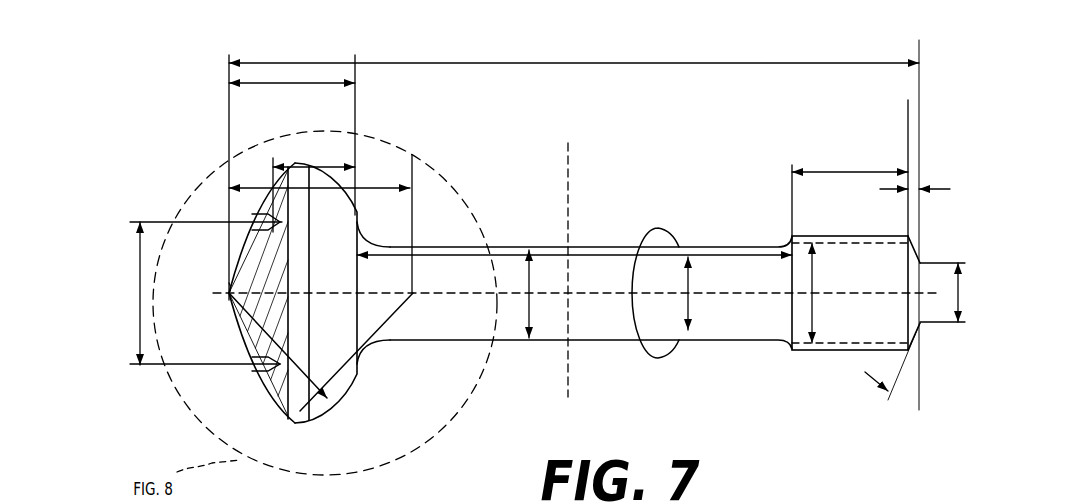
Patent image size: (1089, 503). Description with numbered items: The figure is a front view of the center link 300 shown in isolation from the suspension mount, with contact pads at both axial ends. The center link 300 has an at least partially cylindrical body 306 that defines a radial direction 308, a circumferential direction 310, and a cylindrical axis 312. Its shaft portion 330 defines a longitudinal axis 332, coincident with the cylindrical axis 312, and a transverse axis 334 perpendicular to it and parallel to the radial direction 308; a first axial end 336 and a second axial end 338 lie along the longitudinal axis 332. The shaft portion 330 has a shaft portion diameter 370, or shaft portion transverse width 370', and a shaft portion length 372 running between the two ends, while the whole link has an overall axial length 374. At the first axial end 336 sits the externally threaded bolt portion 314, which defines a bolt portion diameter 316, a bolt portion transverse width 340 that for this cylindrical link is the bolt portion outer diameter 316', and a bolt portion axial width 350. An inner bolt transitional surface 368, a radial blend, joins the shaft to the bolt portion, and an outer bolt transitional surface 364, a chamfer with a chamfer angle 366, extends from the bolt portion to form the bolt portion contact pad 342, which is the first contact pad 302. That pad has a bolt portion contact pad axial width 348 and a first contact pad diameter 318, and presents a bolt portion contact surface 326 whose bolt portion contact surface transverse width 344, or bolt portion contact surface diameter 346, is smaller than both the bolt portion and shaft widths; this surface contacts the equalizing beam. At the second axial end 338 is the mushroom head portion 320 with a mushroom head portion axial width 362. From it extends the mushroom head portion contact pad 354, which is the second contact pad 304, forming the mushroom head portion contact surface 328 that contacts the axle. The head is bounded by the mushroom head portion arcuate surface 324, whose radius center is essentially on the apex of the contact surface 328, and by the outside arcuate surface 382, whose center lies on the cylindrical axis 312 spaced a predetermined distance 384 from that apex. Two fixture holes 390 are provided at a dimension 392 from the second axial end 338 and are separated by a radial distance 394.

The center link 300 is at (652, 123).
The first contact pad 302 is at (920, 263).
The second contact pad 304 is at (227, 315).
The at least partially cylindrical body 306 is at (596, 225).
The radial direction 308 is at (693, 305).
The circumferential direction 310 is at (667, 242).
The cylindrical axis 312 is at (583, 296).
The bolt portion 314 is at (825, 232).
The bolt portion diameter 316 is at (850, 351).
The bolt portion outer diameter 316' is at (830, 319).
The first contact pad diameter 318 is at (958, 270).
The mushroom head portion 320 is at (328, 164).
The mushroom head portion arcuate surface 324 is at (318, 382).
The bolt portion contact surface 326 is at (920, 310).
The mushroom head portion contact surface 328 is at (226, 305).
The shaft portion 330 is at (622, 330).
The longitudinal axis 332 is at (553, 295).
The transverse axis 334 is at (568, 163).
The first axial end 336 is at (787, 232).
The second axial end 338 is at (365, 222).
The bolt portion transverse width 340 is at (815, 266).
The bolt portion contact pad 342 is at (920, 278).
The bolt portion contact surface transverse width 344 is at (920, 300).
The bolt portion contact surface diameter 346 is at (920, 308).
The bolt portion contact pad axial width 348 is at (945, 187).
The bolt portion axial width 350 is at (835, 170).
The mushroom head portion contact pad 354 is at (232, 270).
The mushroom head portion axial width 362 is at (258, 84).
The outer bolt transitional surface 364 is at (925, 335).
The chamfer angle 366 is at (922, 397).
The inner bolt transitional surface 368 is at (773, 238).
The shaft portion diameter 370 is at (545, 270).
The shaft portion transverse width 370' is at (493, 373).
The shaft portion length 372 is at (529, 253).
The overall axial length 374 is at (518, 62).
The outside arcuate surface 382 is at (258, 387).
The predetermined distance 384 is at (399, 190).
The fixture holes 390 is at (290, 225).
The dimension 392 is at (355, 145).
The radial distance 394 is at (138, 320).